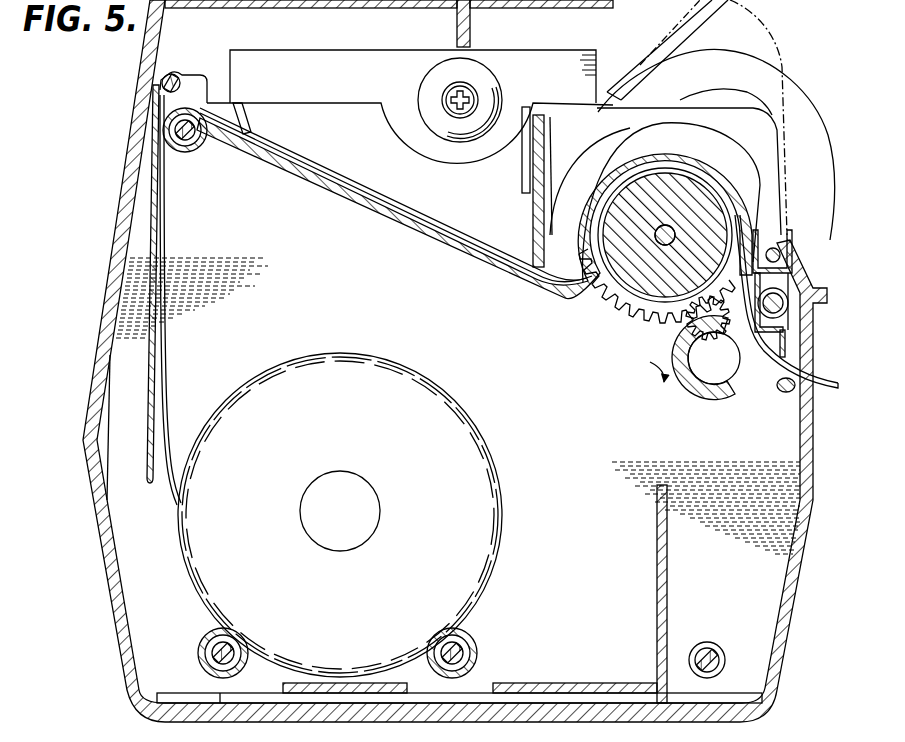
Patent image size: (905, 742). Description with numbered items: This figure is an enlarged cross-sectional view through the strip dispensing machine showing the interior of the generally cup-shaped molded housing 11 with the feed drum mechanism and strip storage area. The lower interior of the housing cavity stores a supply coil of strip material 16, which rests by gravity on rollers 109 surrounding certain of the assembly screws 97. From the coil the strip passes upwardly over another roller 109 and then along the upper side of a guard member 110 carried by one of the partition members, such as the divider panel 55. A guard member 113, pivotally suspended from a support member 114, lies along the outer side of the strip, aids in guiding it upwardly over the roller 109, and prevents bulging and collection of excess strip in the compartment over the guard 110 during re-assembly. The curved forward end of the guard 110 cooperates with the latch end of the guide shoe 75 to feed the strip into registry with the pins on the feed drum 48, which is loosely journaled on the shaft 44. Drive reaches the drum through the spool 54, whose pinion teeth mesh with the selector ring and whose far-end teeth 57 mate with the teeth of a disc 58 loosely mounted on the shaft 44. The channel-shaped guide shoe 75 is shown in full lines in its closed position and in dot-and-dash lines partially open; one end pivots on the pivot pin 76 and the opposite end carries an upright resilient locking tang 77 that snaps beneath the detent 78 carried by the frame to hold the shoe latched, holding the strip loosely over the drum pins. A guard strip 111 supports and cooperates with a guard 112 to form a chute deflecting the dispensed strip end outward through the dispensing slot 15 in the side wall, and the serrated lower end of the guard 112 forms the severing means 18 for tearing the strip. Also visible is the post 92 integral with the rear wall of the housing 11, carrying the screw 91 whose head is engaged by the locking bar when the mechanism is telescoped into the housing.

The housing 11 is at (99, 526).
The dispensing slot 15 is at (795, 333).
The strip material 16 is at (503, 497).
The severing means 18 is at (787, 347).
The shaft 44 is at (660, 250).
The feed drum 48 is at (603, 291).
The spool 54 is at (686, 389).
The divider panel 55 is at (341, 295).
The teeth 57 is at (678, 340).
The disc 58 is at (684, 313).
The guide shoe 75 is at (812, 83).
The pivot pin 76 is at (790, 252).
The locking tang 77 is at (540, 135).
The detent 78 is at (541, 112).
The screw 91 is at (453, 113).
The post 92 is at (437, 90).
The assembly screws 97 is at (187, 153).
The rollers 109 is at (203, 140).
The guard member 110 is at (303, 184).
The guard strip 111 is at (773, 376).
The guard 112 is at (791, 312).
The guard member 113 is at (147, 347).
The support member 114 is at (173, 76).